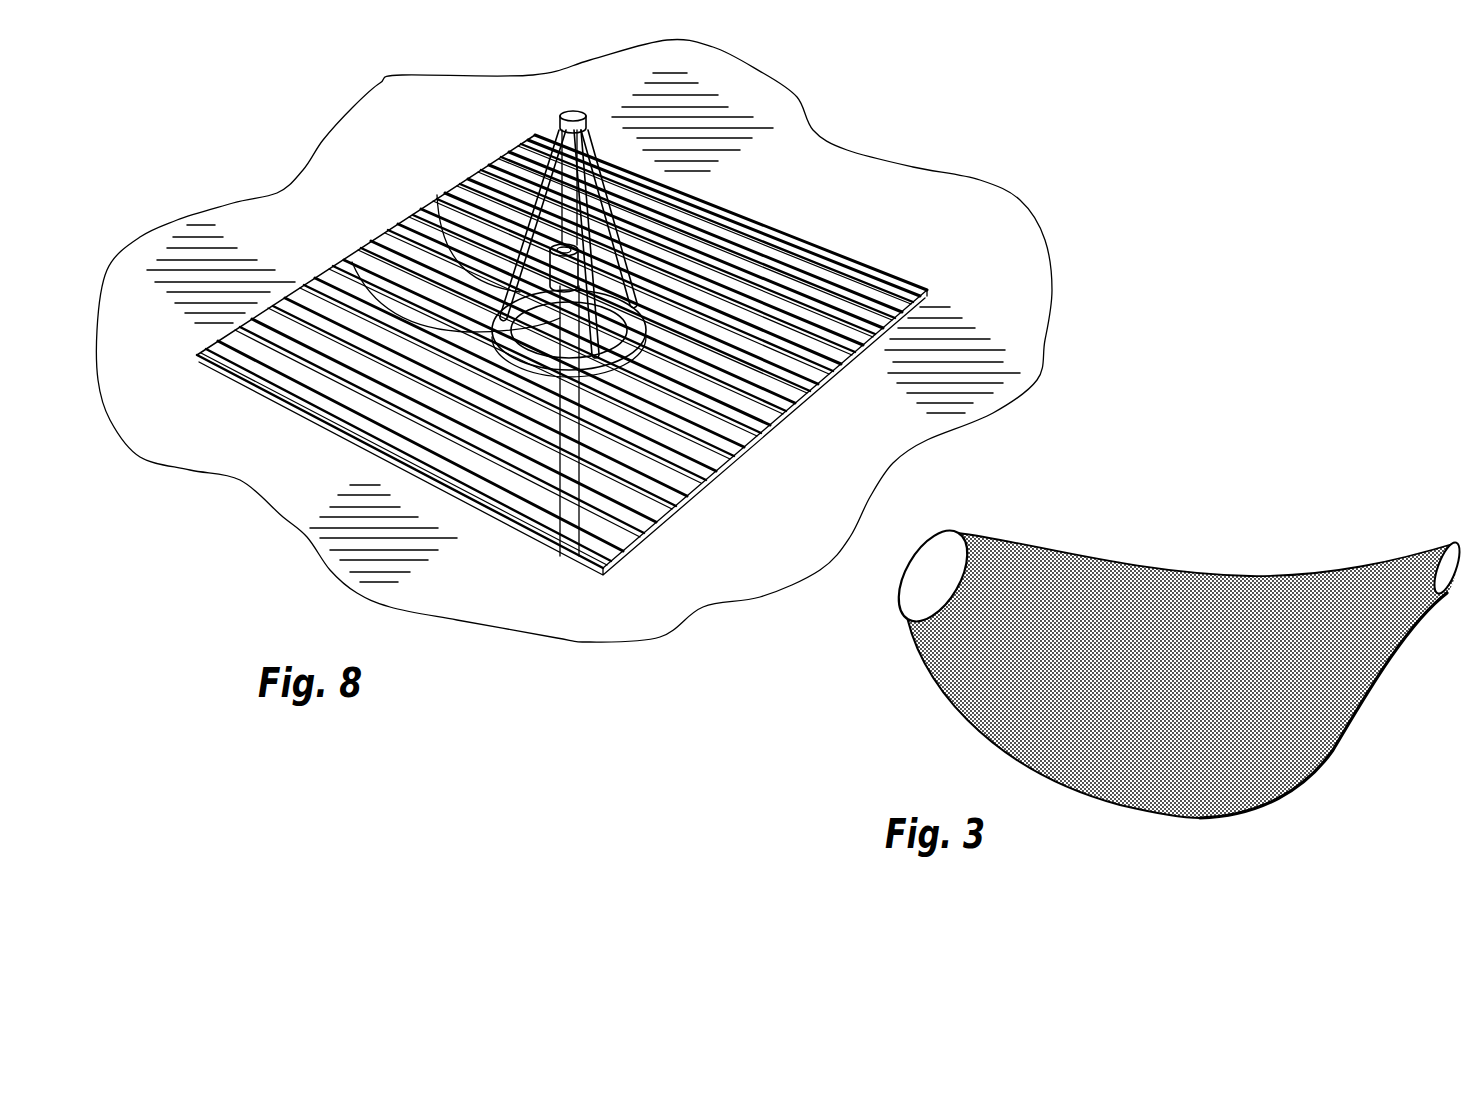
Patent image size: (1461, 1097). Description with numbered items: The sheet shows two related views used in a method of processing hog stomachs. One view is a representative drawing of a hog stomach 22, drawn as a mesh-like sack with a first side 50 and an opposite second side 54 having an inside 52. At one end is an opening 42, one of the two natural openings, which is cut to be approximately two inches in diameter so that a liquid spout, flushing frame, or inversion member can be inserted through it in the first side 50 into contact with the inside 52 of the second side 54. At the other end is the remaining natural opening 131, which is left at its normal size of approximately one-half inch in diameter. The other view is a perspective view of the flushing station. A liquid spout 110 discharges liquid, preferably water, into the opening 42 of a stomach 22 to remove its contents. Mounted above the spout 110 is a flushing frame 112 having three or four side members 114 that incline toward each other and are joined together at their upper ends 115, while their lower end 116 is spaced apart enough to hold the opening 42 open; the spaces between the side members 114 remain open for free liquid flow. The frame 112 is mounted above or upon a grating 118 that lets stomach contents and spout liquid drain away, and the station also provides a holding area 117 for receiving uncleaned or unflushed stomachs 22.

In FIG. 8, the liquid spout 110 is at (438, 257).
In FIG. 8, the flushing frame 112 is at (622, 208).
In FIG. 8, the side members 114 is at (496, 168).
In FIG. 8, the upper ends 115 is at (553, 133).
In FIG. 8, the lower end 116 is at (362, 287).
In FIG. 8, the holding area 117 is at (968, 282).
In FIG. 8, the grating 118 is at (782, 402).
In FIG. 3, the stomach 22 is at (1173, 659).
In FIG. 3, the opening 42 is at (946, 556).
In FIG. 3, the first side 50 is at (1148, 562).
In FIG. 3, the inside 52 is at (1357, 688).
In FIG. 3, the second side 54 is at (1210, 818).
In FIG. 3, the natural opening 131 is at (1452, 565).